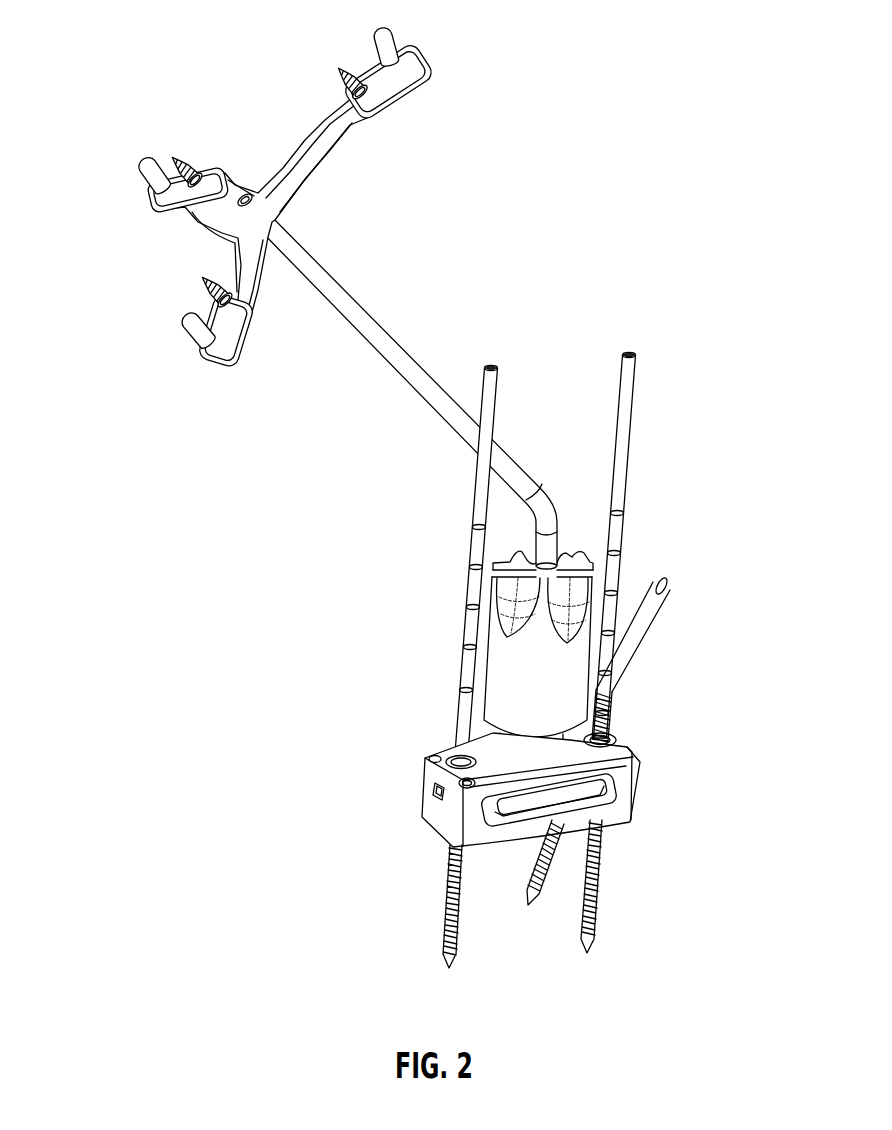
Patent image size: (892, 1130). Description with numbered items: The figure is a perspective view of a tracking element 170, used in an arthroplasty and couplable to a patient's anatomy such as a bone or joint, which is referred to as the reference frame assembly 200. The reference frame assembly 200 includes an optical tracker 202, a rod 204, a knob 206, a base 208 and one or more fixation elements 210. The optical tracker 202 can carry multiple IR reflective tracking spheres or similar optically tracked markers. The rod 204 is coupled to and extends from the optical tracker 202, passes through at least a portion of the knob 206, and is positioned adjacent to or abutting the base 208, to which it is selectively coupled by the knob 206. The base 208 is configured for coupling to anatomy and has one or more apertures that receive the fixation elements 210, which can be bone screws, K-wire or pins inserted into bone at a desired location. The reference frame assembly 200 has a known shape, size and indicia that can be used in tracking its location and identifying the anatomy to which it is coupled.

The tracking element 170 is at (603, 153).
The reference frame assembly 200 is at (436, 497).
The optical tracker 202 is at (300, 138).
The rod 204 is at (351, 287).
The knob 206 is at (502, 595).
The base 208 is at (428, 792).
The fixation elements 210 is at (477, 501).